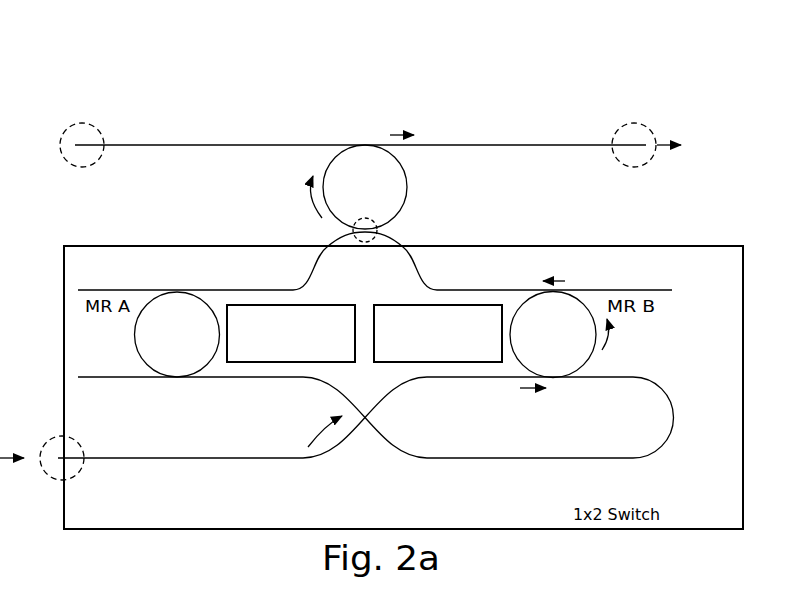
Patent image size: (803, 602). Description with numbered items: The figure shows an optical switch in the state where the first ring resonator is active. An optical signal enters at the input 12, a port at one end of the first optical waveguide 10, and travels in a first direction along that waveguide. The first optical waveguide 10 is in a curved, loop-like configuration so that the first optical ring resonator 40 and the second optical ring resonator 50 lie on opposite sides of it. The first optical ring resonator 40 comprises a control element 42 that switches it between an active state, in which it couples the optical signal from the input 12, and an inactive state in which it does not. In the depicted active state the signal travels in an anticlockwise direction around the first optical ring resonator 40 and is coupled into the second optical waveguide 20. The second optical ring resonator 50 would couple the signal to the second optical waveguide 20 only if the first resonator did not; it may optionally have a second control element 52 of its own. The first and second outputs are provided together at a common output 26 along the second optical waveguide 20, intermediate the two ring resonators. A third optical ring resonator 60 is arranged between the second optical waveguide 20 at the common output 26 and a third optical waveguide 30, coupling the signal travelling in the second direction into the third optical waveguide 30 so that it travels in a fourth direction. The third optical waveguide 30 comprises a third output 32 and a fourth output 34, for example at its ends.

The first optical waveguide 10 is at (660, 448).
The input 12 is at (84, 460).
The second optical waveguide 20 is at (405, 259).
The common output 26 is at (372, 219).
The third optical waveguide 30 is at (452, 144).
The third output 32 is at (648, 122).
The fourth output 34 is at (95, 125).
The first optical ring resonator 40 is at (583, 366).
The control element 42 is at (392, 305).
The second optical ring resonator 50 is at (137, 362).
The second control element 52 is at (338, 305).
The third optical ring resonator 60 is at (327, 163).